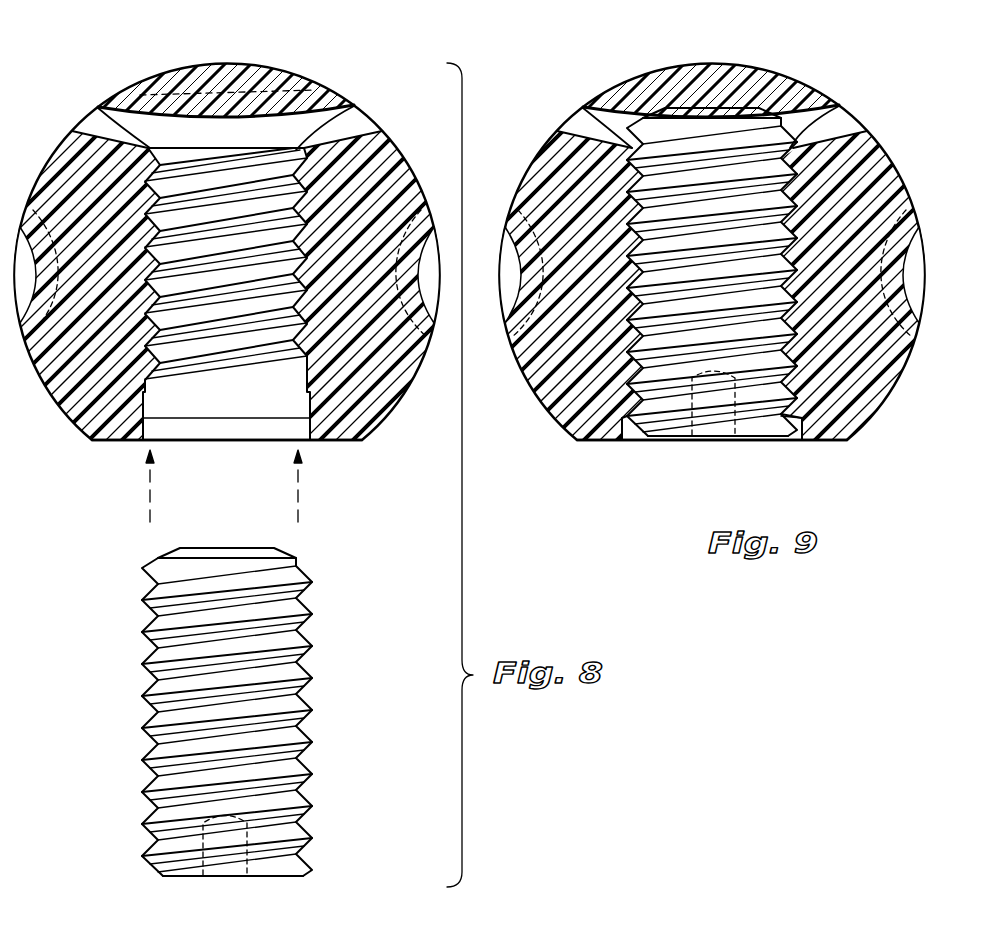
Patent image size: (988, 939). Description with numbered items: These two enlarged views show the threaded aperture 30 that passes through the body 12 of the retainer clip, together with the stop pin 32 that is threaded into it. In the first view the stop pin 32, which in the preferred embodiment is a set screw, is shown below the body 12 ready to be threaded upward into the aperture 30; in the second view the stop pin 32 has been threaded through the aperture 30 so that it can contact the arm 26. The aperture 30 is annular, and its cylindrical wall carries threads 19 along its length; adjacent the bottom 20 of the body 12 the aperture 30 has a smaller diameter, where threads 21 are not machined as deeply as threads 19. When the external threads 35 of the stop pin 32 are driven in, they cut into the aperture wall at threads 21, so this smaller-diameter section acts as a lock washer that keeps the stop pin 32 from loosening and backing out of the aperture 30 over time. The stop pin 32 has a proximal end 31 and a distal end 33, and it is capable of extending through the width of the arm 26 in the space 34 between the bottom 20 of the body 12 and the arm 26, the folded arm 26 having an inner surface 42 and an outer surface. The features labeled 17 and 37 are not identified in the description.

In FIG. 8, the body 12 is at (88, 388).
In FIG. 9, the body 12 is at (567, 370).
In FIG. 8, the flat bottom surface 17 is at (113, 442).
In FIG. 9, the flat bottom surface 17 is at (595, 442).
In FIG. 8, the threads 19 is at (165, 298).
In FIG. 8, the bottom 20 is at (150, 147).
In FIG. 9, the bottom 20 is at (627, 146).
In FIG. 8, the threads 21 is at (290, 148).
In FIG. 8, the arm 26 is at (173, 100).
In FIG. 9, the arm 26 is at (663, 78).
In FIG. 8, the aperture 30 is at (277, 432).
In FIG. 9, the aperture 30 is at (798, 428).
In FIG. 8, the proximal end 31 is at (167, 878).
In FIG. 9, the proximal end 31 is at (740, 436).
In FIG. 8, the stop pin 32 is at (132, 653).
In FIG. 9, the stop pin 32 is at (658, 441).
In FIG. 8, the distal end 33 is at (200, 548).
In FIG. 9, the distal end 33 is at (790, 107).
In FIG. 8, the space 34 is at (178, 130).
In FIG. 9, the space 34 is at (820, 118).
In FIG. 8, the threads 35 is at (140, 724).
In FIG. 8, the hidden bore in screw 37 is at (232, 876).
In FIG. 9, the hidden bore in screw 37 is at (697, 436).
In FIG. 8, the inner surface 42 is at (230, 115).
In FIG. 9, the inner surface 42 is at (630, 112).